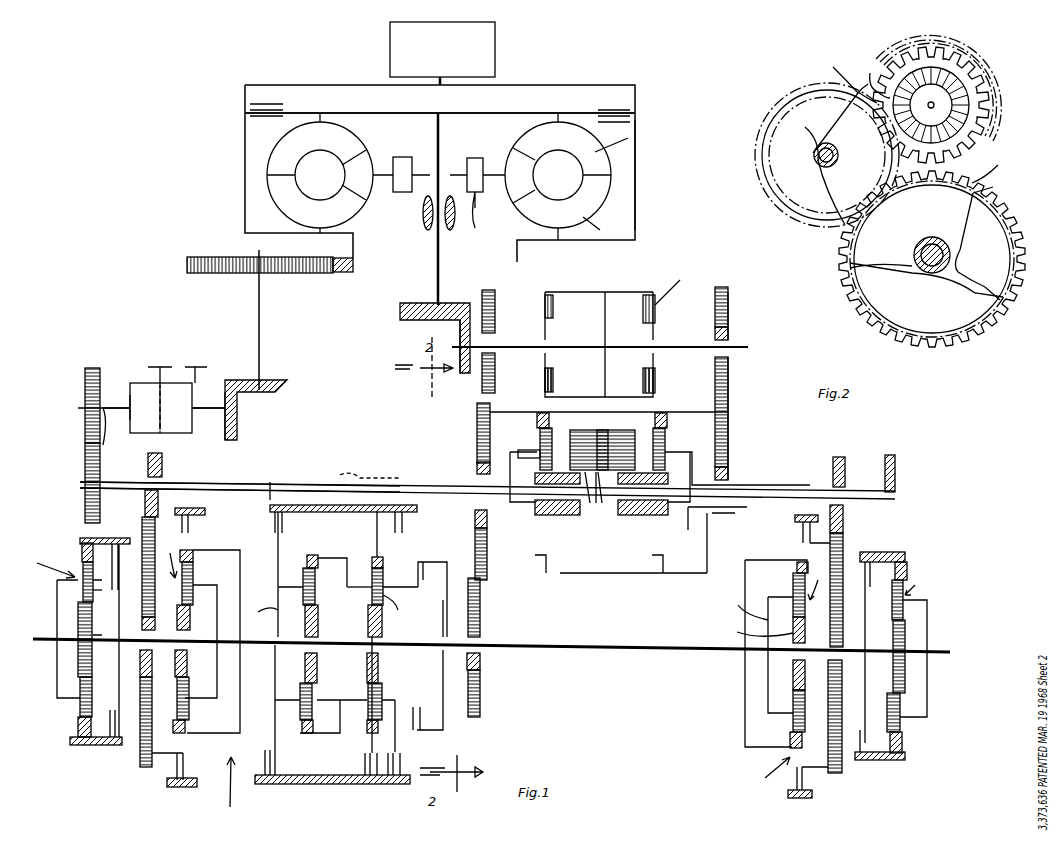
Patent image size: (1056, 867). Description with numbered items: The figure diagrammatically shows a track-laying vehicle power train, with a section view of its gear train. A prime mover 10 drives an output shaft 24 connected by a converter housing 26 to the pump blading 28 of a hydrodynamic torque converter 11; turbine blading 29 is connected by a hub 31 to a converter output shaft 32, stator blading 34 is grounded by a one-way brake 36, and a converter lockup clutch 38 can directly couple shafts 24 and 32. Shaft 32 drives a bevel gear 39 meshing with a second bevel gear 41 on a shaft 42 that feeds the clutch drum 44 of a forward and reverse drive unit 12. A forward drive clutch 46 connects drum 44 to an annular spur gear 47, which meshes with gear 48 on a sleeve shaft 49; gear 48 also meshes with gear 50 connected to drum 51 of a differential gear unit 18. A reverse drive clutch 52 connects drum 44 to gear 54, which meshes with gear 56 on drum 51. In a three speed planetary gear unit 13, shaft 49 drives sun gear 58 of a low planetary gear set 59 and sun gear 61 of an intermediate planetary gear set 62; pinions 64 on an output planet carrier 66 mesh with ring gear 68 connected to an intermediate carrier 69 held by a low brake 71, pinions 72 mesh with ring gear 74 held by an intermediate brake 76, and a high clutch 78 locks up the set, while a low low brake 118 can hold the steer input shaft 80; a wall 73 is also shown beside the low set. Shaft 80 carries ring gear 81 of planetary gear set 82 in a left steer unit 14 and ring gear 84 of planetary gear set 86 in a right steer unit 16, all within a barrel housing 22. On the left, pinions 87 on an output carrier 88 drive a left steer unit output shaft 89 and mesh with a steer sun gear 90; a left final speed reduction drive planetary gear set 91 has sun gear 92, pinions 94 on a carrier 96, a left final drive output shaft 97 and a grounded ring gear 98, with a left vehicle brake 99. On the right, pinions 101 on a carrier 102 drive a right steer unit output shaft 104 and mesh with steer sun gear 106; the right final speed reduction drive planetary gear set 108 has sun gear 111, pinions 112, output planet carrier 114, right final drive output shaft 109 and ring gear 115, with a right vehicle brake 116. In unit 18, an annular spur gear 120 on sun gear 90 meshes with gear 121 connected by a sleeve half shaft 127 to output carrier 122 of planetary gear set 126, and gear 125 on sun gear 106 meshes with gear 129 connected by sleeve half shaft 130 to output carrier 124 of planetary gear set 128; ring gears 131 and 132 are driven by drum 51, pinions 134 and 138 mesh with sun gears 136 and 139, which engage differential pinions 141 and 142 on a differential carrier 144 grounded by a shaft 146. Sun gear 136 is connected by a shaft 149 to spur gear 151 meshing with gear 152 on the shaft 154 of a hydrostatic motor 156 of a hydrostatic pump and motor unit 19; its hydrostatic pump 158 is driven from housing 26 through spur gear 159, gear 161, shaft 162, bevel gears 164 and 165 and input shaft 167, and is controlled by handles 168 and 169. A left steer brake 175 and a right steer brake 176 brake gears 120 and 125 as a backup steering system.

In FIG. 1, the prime mover 10 is at (390, 42).
In FIG. 1, the hydrodynamic torque converter 11 is at (648, 212).
In FIG. 1, the forward and reverse drive unit 12 is at (664, 300).
In FIG. 1, the three speed planetary gear unit 13 is at (340, 792).
In FIG. 1, the left steer unit 14 is at (230, 791).
In FIG. 1, the right steer unit 16 is at (766, 771).
In FIG. 1, the differential gear unit 18 is at (694, 402).
In FIG. 1, the hydrostatic pump and motor unit 19 is at (135, 383).
In FIG. 1, the barrel housing 22 is at (380, 785).
In FIG. 1, the output shaft 24 is at (440, 80).
In FIG. 1, the converter housing 26 is at (636, 178).
In FIG. 1, the pump blading 28 is at (602, 223).
In FIG. 1, the turbine blading 29 is at (631, 137).
In FIG. 1, the hub 31 is at (365, 113).
In FIG. 1, the converter output shaft 32 is at (437, 152).
In FIG. 1, the stator blading 34 is at (505, 165).
In FIG. 1, the one-way brake 36 is at (485, 213).
In FIG. 1, the converter lockup clutch 38 is at (630, 118).
In FIG. 1, the bevel gear 39 is at (420, 303).
In FIG. 1, the second bevel gear 41 is at (462, 375).
In FIG. 2, the second bevel gear 41 is at (938, 100).
In FIG. 1, the shaft 42 is at (565, 345).
In FIG. 2, the shaft 42 is at (934, 105).
In FIG. 1, the clutch drum 44 is at (580, 292).
In FIG. 1, the forward drive clutch 46 is at (545, 305).
In FIG. 1, the annular spur gear 47 is at (482, 300).
In FIG. 2, the annular spur gear 47 is at (870, 73).
In FIG. 1, the annular spur gear 48 is at (482, 615).
In FIG. 2, the annular spur gear 48 is at (827, 139).
In FIG. 1, the sleeve shaft 49 is at (428, 630).
In FIG. 2, the sleeve shaft 49 is at (816, 168).
In FIG. 1, the annular spur gear 50 is at (477, 450).
In FIG. 2, the annular spur gear 50 is at (990, 200).
In FIG. 1, the drum 51 is at (548, 390).
In FIG. 1, the reverse drive clutch 52 is at (648, 295).
In FIG. 1, the annular spur gear 54 is at (728, 305).
In FIG. 2, the annular spur gear 54 is at (975, 180).
In FIG. 1, the second annular spur gear 56 is at (730, 435).
In FIG. 2, the second annular spur gear 56 is at (968, 190).
In FIG. 1, the sun gear 58 is at (347, 665).
In FIG. 1, the low planetary gear set 59 is at (300, 568).
In FIG. 1, the sun gear 61 is at (368, 615).
In FIG. 1, the intermediate planetary gear set 62 is at (368, 575).
In FIG. 1, the pinions 64 is at (305, 610).
In FIG. 1, the output planet carrier 66 is at (282, 590).
In FIG. 1, the ring gear 68 is at (320, 558).
In FIG. 1, the intermediate carrier 69 is at (355, 588).
In FIG. 1, the low brake 71 is at (408, 518).
In FIG. 1, the pinions 72 is at (400, 605).
In FIG. 1, the wall 73 is at (264, 607).
In FIG. 1, the ring gear 74 is at (372, 560).
In FIG. 1, the intermediate brake 76 is at (405, 484).
In FIG. 1, the high clutch 78 is at (430, 563).
In FIG. 1, the steer units' input shaft 80 is at (585, 648).
In FIG. 2, the steer units' input shaft 80 is at (814, 158).
In FIG. 1, the ring gear 81 is at (195, 550).
In FIG. 1, the planetary gear set 82 is at (168, 558).
In FIG. 1, the ring gear 84 is at (800, 562).
In FIG. 1, the planetary gear set 86 is at (818, 578).
In FIG. 1, the pinions 87 is at (193, 575).
In FIG. 1, the output carrier 88 is at (193, 590).
In FIG. 1, the left steer unit output shaft 89 is at (200, 645).
In FIG. 1, the annular steer sun gear 90 is at (177, 620).
In FIG. 1, the left final speed reduction drive planetary gear set 91 is at (50, 564).
In FIG. 1, the sun gear 92 is at (78, 630).
In FIG. 1, the pinions 94 is at (82, 565).
In FIG. 1, the carrier 96 is at (57, 585).
In FIG. 1, the left final drive output shaft 97 is at (44, 642).
In FIG. 1, the ring gear 98 is at (90, 537).
In FIG. 1, the left vehicle brake 99 is at (118, 580).
In FIG. 1, the pinions 101 is at (793, 590).
In FIG. 1, the carrier 102 is at (735, 607).
In FIG. 1, the right steer unit output shaft 104 is at (790, 655).
In FIG. 1, the annular steer sun gear 106 is at (748, 628).
In FIG. 1, the right final speed reduction drive planetary gear set 108 is at (932, 580).
In FIG. 1, the right final drive output shaft 109 is at (940, 655).
In FIG. 1, the sun gear 111 is at (905, 637).
In FIG. 1, the pinions 112 is at (905, 575).
In FIG. 1, the output planet carrier 114 is at (927, 602).
In FIG. 1, the ring gear 115 is at (905, 565).
In FIG. 1, the right vehicle brake 116 is at (888, 553).
In FIG. 1, the low low brake 118 is at (272, 500).
In FIG. 1, the annular spur gear 120 is at (142, 545).
In FIG. 1, the second spur gear 121 is at (162, 465).
In FIG. 1, the output carrier 122 is at (520, 450).
In FIG. 1, the output carrier 124 is at (675, 455).
In FIG. 1, the annular spur gear 125 is at (843, 545).
In FIG. 1, the planetary gear set 126 is at (553, 440).
In FIG. 1, the sleeve half shaft 127 is at (230, 482).
In FIG. 2, the sleeve half shaft 127 is at (930, 237).
In FIG. 1, the planetary gear set 128 is at (650, 392).
In FIG. 1, the second spur gear 129 is at (890, 470).
In FIG. 1, the sleeve half shaft 130 is at (798, 487).
In FIG. 1, the ring gear 131 is at (537, 420).
In FIG. 1, the ring gear 132 is at (660, 430).
In FIG. 1, the pinions 134 is at (540, 487).
In FIG. 1, the left sun gear 136 is at (555, 518).
In FIG. 1, the pinions 138 is at (660, 487).
In FIG. 1, the annular sun gear 139 is at (640, 518).
In FIG. 1, the differential pinion 141 is at (578, 432).
In FIG. 1, the differential pinion 142 is at (615, 430).
In FIG. 1, the differential carrier 144 is at (593, 503).
In FIG. 1, the shaft 146 is at (752, 485).
In FIG. 1, the shaft 149 is at (345, 480).
In FIG. 2, the shaft 149 is at (915, 255).
In FIG. 1, the spur gear 151 is at (85, 462).
In FIG. 1, the second spur gear 152 is at (85, 400).
In FIG. 1, the shaft 154 is at (105, 435).
In FIG. 1, the hydrostatic motor 156 is at (130, 395).
In FIG. 1, the hydrostatic pump 158 is at (165, 385).
In FIG. 1, the spur gear 159 is at (345, 272).
In FIG. 1, the second spur gear 161 is at (290, 273).
In FIG. 1, the shaft 162 is at (259, 315).
In FIG. 1, the bevel gear 164 is at (287, 385).
In FIG. 1, the second bevel gear 165 is at (225, 392).
In FIG. 1, the input shaft 167 is at (210, 410).
In FIG. 1, the handle 168 is at (161, 367).
In FIG. 1, the handle 169 is at (196, 367).
In FIG. 1, the left steer brake 175 is at (200, 520).
In FIG. 1, the right steer brake 176 is at (800, 535).